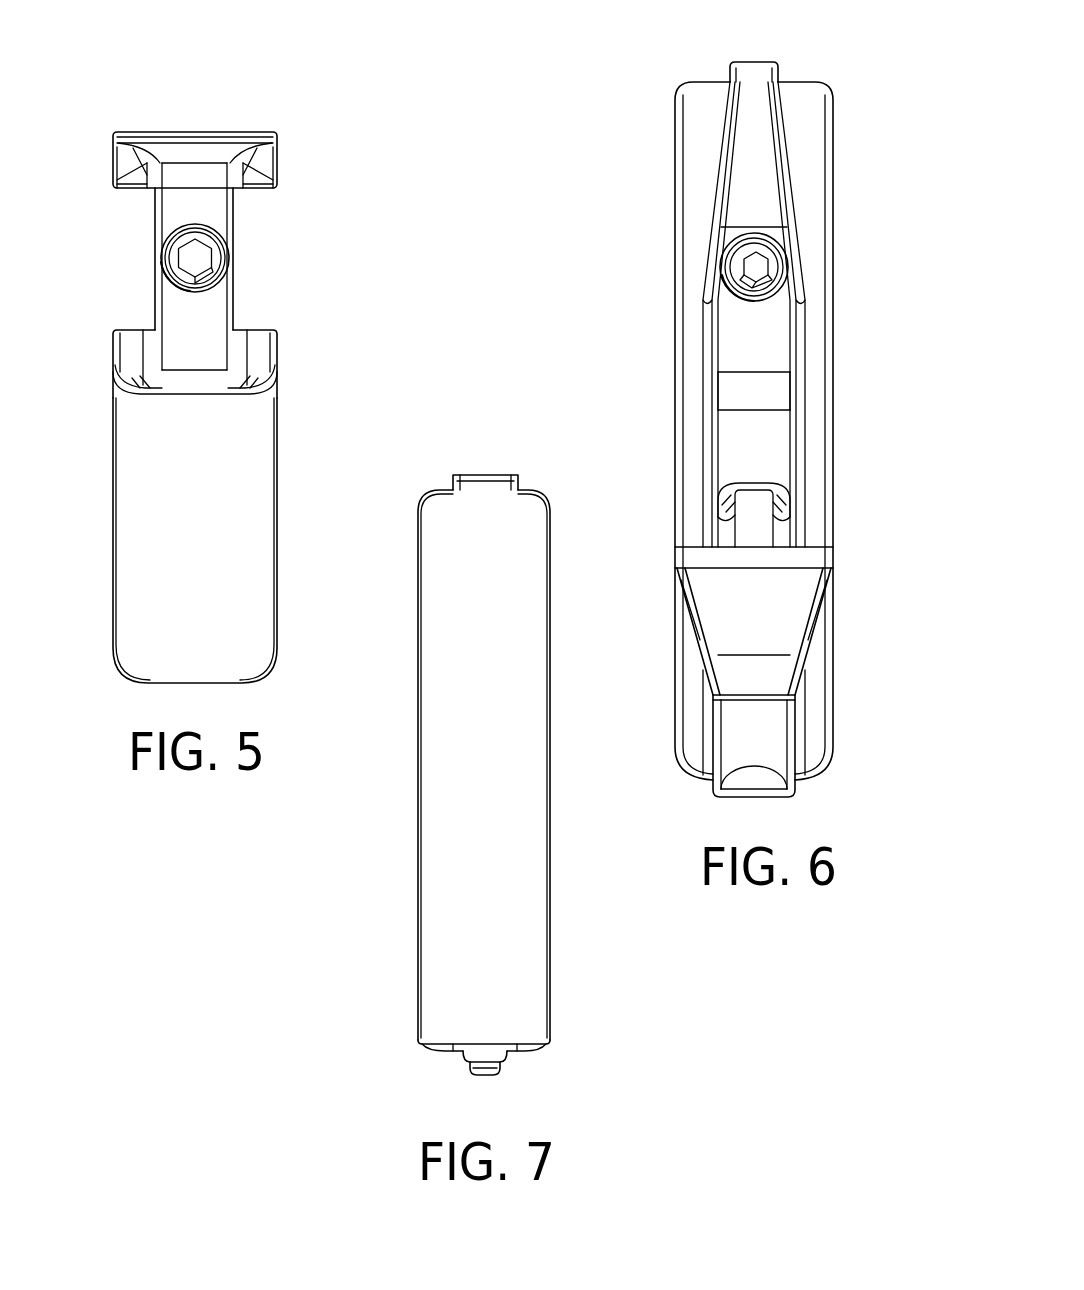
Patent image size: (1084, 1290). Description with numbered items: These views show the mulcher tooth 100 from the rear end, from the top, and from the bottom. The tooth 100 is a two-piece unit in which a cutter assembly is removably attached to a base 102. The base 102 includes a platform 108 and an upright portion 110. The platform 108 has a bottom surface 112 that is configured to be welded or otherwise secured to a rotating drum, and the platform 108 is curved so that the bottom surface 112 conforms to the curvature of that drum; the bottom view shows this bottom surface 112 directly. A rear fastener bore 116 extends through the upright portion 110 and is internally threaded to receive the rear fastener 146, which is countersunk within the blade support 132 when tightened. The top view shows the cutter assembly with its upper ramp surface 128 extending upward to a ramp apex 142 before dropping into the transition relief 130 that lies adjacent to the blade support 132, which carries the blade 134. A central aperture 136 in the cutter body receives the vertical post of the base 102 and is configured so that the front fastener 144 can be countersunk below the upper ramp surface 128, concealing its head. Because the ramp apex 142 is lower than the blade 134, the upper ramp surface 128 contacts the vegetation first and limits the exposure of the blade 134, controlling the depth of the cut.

In FIG. 5, the tooth 100 is at (153, 80).
In FIG. 6, the tooth 100 is at (610, 253).
In FIG. 7, the tooth 100 is at (360, 769).
In FIG. 7, the base 102 is at (410, 839).
In FIG. 5, the platform 108 is at (258, 353).
In FIG. 6, the platform 108 is at (695, 180).
In FIG. 5, the upright portion 110 is at (213, 205).
In FIG. 6, the upright portion 110 is at (755, 738).
In FIG. 7, the bottom surface 112 is at (497, 1008).
In FIG. 5, the rear fastener bore 116 is at (175, 287).
In FIG. 6, the rear fastener bore 116 is at (768, 787).
In FIG. 6, the upper ramp surface 128 is at (755, 158).
In FIG. 6, the transition relief 130 is at (772, 440).
In FIG. 5, the blade support 132 is at (197, 145).
In FIG. 6, the blade support 132 is at (755, 640).
In FIG. 5, the blade 134 is at (262, 173).
In FIG. 6, the blade 134 is at (793, 562).
In FIG. 6, the central aperture 136 is at (770, 243).
In FIG. 6, the ramp apex 142 is at (760, 383).
In FIG. 6, the front fastener 144 is at (772, 270).
In FIG. 5, the rear fastener 146 is at (215, 265).